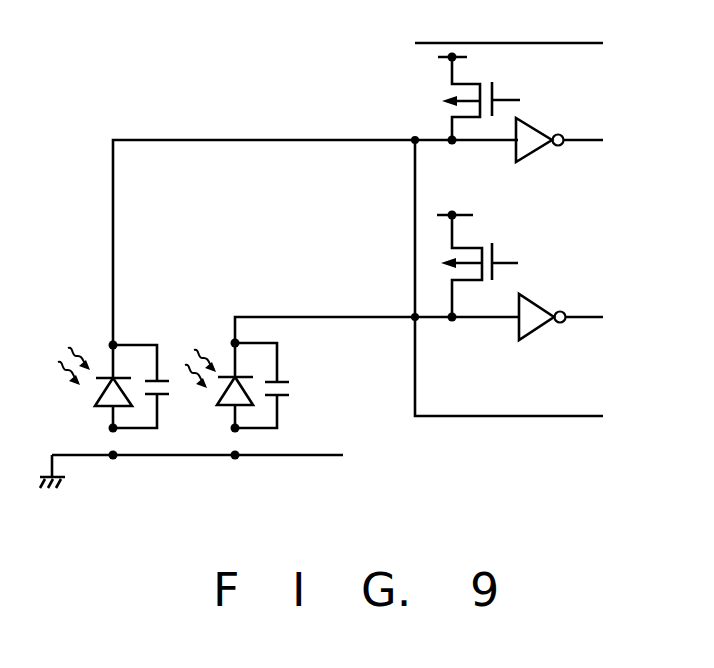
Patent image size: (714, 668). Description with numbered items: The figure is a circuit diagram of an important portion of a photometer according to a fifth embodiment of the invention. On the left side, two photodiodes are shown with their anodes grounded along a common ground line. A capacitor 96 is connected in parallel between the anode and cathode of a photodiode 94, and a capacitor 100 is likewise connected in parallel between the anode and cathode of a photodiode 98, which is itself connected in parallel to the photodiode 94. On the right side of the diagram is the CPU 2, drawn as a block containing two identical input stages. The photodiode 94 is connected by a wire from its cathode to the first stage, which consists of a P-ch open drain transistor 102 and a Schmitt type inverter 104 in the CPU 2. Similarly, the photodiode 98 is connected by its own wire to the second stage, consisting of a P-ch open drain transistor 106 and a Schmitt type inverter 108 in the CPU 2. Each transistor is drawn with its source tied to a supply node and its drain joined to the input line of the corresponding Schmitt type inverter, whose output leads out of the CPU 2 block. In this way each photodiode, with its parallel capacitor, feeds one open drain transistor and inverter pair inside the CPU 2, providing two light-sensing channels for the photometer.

The CPU 2 is at (555, 42).
The photodiode 94 is at (93, 392).
The capacitor 96 is at (163, 372).
The photodiode 98 is at (227, 407).
The capacitor 100 is at (295, 389).
The P-ch open drain transistor 102 is at (500, 91).
The Schmitt type inverter 104 is at (538, 152).
The P-ch open drain transistor 106 is at (495, 262).
The Schmitt type inverter 108 is at (552, 293).